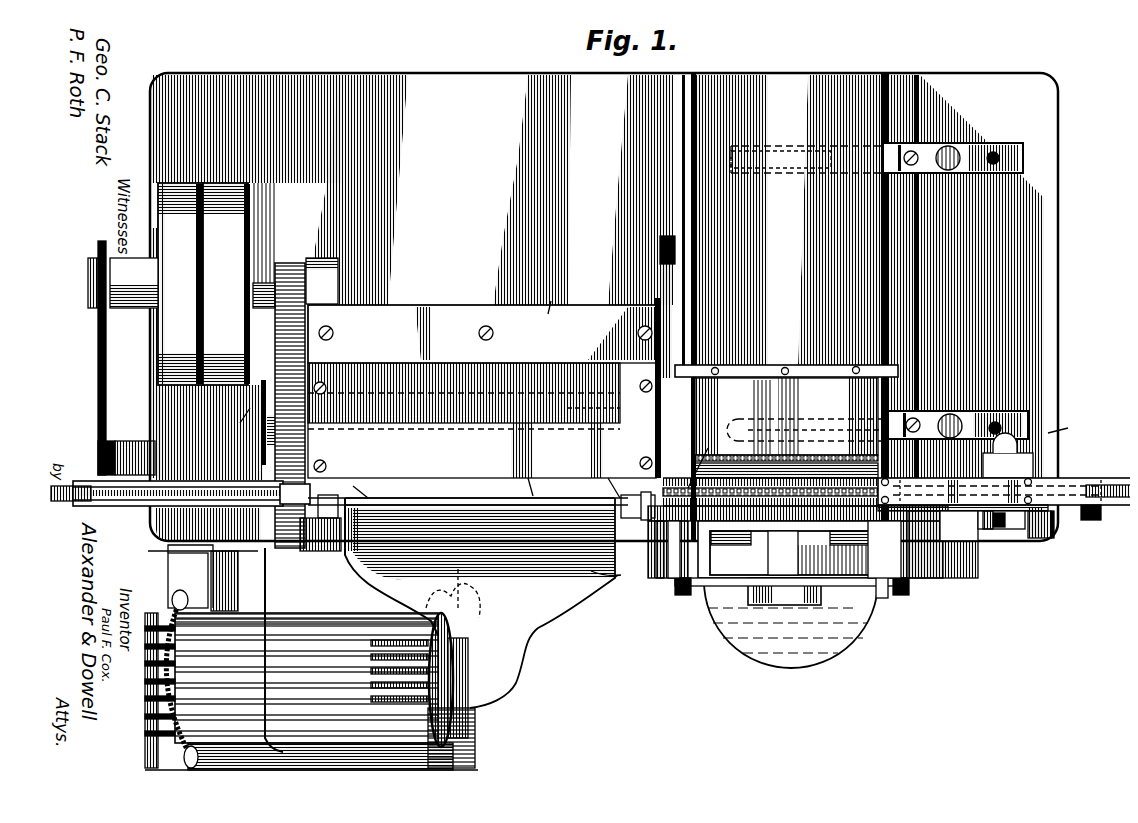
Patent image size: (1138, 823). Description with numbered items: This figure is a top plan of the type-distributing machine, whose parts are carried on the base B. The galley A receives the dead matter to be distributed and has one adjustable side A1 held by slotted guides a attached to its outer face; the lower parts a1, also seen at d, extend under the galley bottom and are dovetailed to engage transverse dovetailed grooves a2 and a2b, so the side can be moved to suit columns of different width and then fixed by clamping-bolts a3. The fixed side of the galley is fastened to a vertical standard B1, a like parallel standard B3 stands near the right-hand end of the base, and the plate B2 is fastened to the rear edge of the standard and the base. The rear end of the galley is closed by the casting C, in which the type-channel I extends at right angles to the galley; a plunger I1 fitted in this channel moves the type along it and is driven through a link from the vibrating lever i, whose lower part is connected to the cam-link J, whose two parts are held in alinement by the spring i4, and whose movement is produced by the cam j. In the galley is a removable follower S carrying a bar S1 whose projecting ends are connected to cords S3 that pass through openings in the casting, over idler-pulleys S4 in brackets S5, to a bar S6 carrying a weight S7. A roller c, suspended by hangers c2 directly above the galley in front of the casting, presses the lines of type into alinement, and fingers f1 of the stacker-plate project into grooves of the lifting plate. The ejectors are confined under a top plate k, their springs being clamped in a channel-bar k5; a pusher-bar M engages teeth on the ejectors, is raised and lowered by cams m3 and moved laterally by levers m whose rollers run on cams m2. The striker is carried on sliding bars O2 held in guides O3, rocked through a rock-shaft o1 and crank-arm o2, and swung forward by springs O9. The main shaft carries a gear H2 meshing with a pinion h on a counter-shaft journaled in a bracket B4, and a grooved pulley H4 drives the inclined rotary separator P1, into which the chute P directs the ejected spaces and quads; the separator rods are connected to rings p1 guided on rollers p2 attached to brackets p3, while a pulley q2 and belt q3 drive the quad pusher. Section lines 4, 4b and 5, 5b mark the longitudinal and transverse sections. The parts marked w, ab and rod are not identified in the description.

The base B is at (616, 307).
The galley A is at (778, 68).
The section line 5 5 is at (770, 67).
The adjustable side A1 is at (811, 220).
The roller c is at (650, 240).
The lower part of guide d is at (830, 137).
The transverse dovetailed groove a2 is at (770, 140).
The slotted guide a is at (953, 147).
The clamping-bolt a3 is at (943, 138).
The lower part of guide a1 is at (938, 436).
The section line 4 4 is at (1065, 425).
The bar S1 is at (786, 360).
The follower S is at (823, 372).
The hanger c2 is at (807, 434).
The type-channel I is at (701, 457).
The transverse dovetailed groove a2b is at (764, 417).
The standard B1 is at (490, 371).
The standard B3 is at (482, 322).
The channel-bar k5 is at (540, 299).
The pusher-bar M is at (464, 393).
The lever m is at (464, 393).
The cam m3 is at (464, 405).
The cam m2 is at (603, 405).
The top plate k is at (483, 429).
The rock-shaft o1 is at (529, 480).
The crank-arm o2 is at (609, 481).
The casting C is at (637, 490).
The sliding bar O2 is at (320, 487).
The spring O9 is at (371, 484).
The pinion h is at (250, 265).
The worm w is at (283, 265).
The gear H2 is at (299, 417).
The grooved pulley H4 is at (215, 430).
The section line 4 4 4b is at (241, 415).
The bracket B4 is at (123, 274).
The belt q3 is at (97, 385).
The pulley q2 is at (100, 436).
The main shaft rod is at (339, 493).
The guide O3 is at (320, 545).
The chute P is at (525, 630).
The cam j is at (612, 588).
The rotary separator P1 is at (275, 600).
The bracket p3 is at (475, 730).
The ring p1 is at (475, 710).
The roller p2 is at (162, 592).
The frame ab is at (143, 555).
The bracket S5 is at (798, 542).
The plate B2 is at (805, 525).
The section line 5 5 5b is at (784, 591).
The bar S6 is at (710, 595).
The cord S3 is at (665, 560).
The idler-pulley S4 is at (690, 580).
The weight S7 is at (880, 578).
The finger f1 is at (909, 491).
The plunger I1 is at (1090, 478).
The cam-link J is at (961, 541).
The vibrating lever i is at (1083, 514).
The spring i4 is at (1005, 522).